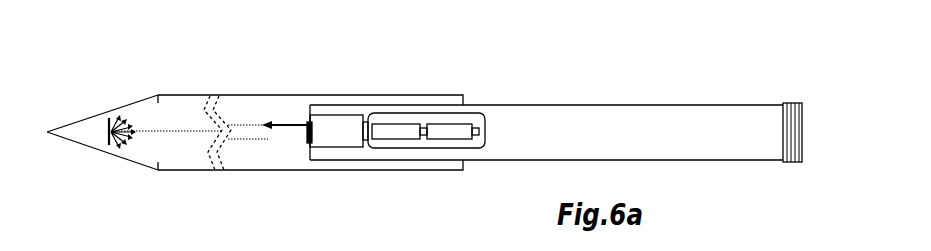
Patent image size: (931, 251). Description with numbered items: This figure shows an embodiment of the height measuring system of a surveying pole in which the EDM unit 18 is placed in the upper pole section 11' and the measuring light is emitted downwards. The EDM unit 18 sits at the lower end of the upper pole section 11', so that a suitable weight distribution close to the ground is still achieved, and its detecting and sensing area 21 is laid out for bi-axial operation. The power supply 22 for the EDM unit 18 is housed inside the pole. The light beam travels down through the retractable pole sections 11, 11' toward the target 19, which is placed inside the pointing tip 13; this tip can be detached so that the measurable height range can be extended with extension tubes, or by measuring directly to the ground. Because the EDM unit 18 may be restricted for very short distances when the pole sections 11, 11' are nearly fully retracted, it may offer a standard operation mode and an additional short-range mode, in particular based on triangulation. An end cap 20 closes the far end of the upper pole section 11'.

The pole section 11 is at (314, 108).
The upper pole section 11' is at (546, 107).
The pointing tip 13 is at (85, 130).
The EDM unit 18 is at (323, 122).
The target 19 is at (106, 132).
The end cap 20 is at (803, 127).
The detecting and sensing area 21 is at (298, 139).
The power supply 22 is at (425, 137).